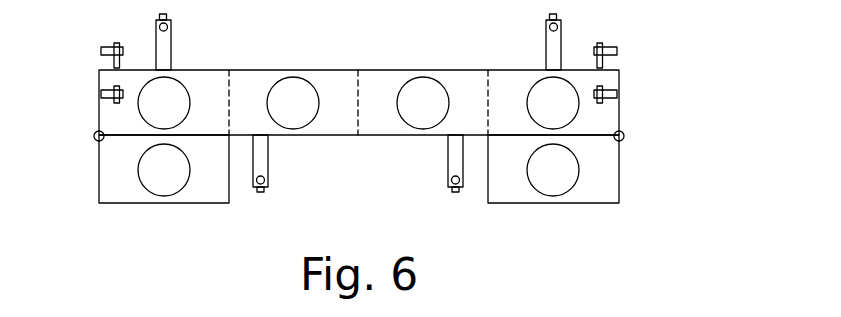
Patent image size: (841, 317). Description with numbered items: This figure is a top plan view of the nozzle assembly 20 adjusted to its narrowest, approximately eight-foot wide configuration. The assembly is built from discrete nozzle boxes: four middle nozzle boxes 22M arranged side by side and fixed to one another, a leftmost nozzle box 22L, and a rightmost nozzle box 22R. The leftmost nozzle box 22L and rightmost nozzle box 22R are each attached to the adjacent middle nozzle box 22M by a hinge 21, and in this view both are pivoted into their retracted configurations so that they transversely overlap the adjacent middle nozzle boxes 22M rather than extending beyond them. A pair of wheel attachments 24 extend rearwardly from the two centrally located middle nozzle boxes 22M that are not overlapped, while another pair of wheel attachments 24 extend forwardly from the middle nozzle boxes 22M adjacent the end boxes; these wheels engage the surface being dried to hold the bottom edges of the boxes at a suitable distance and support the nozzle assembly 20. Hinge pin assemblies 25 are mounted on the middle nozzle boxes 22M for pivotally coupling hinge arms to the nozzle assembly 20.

The nozzle assembly 20 is at (400, 108).
The hinge 21 is at (94, 136).
The leftmost nozzle box 22L is at (110, 175).
The middle nozzle box 22M is at (194, 82).
The rightmost nozzle box 22R is at (607, 175).
The wheel attachment 24 is at (159, 16).
The hinge pin assembly 25 is at (101, 51).